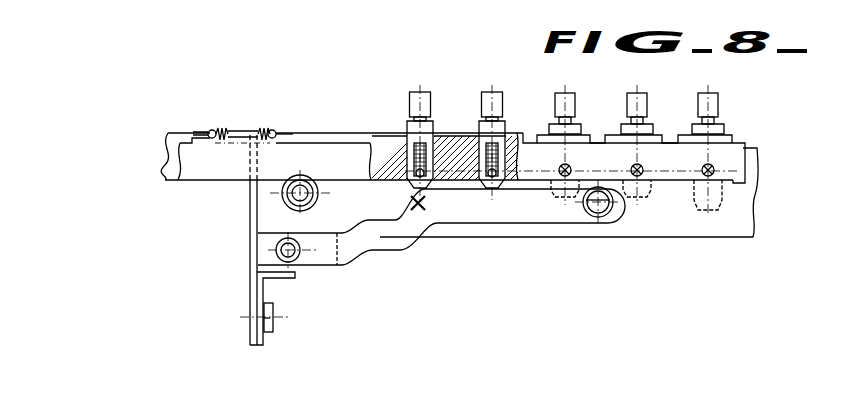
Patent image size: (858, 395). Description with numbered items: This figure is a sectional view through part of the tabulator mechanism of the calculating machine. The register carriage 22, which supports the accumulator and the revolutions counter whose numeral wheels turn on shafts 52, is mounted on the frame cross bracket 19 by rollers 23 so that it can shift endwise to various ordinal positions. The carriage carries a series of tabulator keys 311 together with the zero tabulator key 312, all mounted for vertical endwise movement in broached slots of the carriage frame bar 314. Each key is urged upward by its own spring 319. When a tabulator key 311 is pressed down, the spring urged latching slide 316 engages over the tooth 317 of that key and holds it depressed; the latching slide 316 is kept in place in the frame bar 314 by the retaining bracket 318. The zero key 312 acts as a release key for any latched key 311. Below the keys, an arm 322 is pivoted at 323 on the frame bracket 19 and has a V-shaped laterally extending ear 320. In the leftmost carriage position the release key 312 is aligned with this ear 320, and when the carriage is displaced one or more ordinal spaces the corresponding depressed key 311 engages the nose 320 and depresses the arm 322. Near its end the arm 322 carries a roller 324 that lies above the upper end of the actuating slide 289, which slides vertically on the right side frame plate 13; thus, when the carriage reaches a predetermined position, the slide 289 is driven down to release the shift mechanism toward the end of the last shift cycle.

The right side frame plate 13 is at (256, 256).
The cross bracket 19 is at (668, 233).
The register carriage 22 is at (347, 130).
The rollers 23 is at (284, 195).
The shafts 52 is at (702, 169).
The actuating slide 289 is at (262, 338).
The tabulator keys 311 is at (626, 104).
The zero tabulator key 312 is at (409, 104).
The carriage frame bar 314 is at (732, 140).
The latching slide 316 is at (315, 130).
The tooth 317 is at (500, 124).
The retaining bracket 318 is at (733, 159).
The springs 319 is at (484, 160).
The V-shaped ear 320 is at (410, 198).
The arm 322 is at (391, 248).
The pivot 323 is at (590, 216).
The roller 324 is at (297, 260).